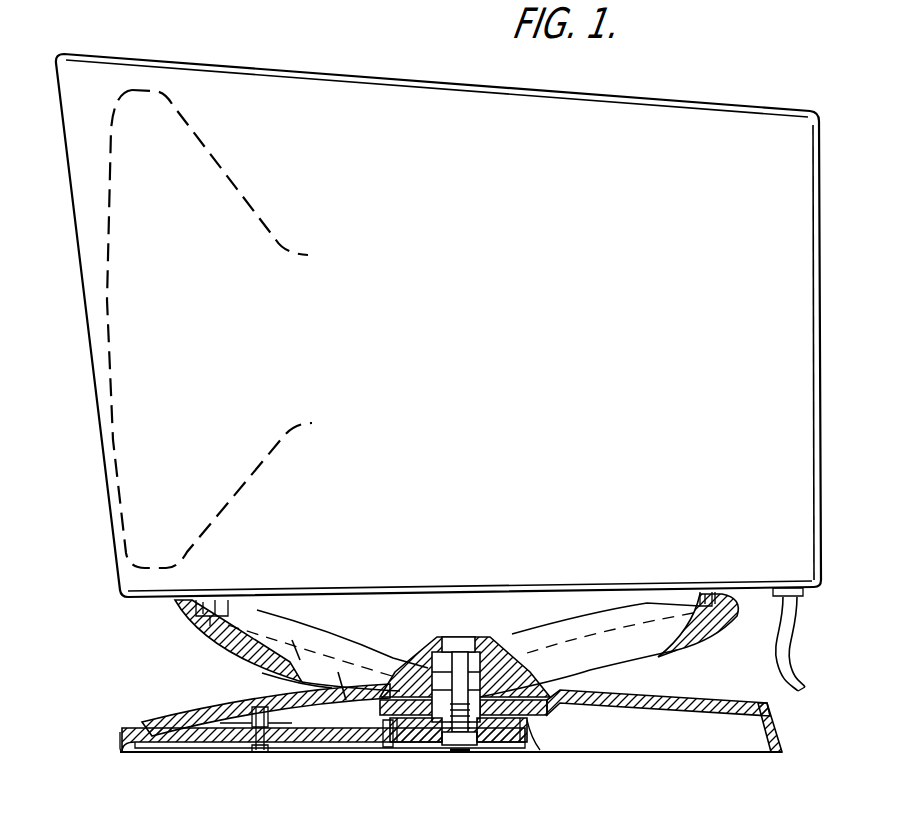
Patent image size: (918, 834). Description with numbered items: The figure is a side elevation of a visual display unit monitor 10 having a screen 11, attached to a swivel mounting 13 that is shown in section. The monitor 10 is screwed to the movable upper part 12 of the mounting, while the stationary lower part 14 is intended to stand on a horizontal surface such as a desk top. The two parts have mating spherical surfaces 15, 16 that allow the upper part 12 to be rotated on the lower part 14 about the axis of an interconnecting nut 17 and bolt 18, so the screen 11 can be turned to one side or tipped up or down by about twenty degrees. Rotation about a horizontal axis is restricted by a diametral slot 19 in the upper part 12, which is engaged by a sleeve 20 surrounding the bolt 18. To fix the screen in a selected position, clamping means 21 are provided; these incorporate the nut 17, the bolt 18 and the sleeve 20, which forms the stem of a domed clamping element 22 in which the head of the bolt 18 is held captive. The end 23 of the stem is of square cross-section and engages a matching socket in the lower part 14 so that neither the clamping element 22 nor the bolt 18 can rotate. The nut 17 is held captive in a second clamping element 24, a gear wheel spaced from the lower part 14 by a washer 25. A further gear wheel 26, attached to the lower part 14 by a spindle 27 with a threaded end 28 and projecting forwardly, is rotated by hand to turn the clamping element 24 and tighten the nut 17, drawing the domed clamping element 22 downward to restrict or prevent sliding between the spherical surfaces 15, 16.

The visual display unit monitor 10 is at (372, 78).
The screen 11 is at (108, 408).
The movable upper part 12 is at (190, 632).
The swivel mounting 13 is at (140, 665).
The stationary lower part 14 is at (188, 718).
The spherical surface 15 is at (268, 680).
The spherical surface 16 is at (342, 692).
The nut 17 is at (472, 748).
The bolt 18 is at (460, 640).
The diametral slot 19 is at (272, 660).
The sleeve 20 is at (505, 672).
The clamping means 21 is at (410, 630).
The domed clamping element 22 is at (400, 656).
The end of the stem 23 is at (495, 742).
The second clamping element 24 is at (533, 740).
The washer 25 is at (430, 745).
The gear wheel 26 is at (132, 735).
The spindle 27 is at (263, 753).
The threaded end 28 is at (258, 712).